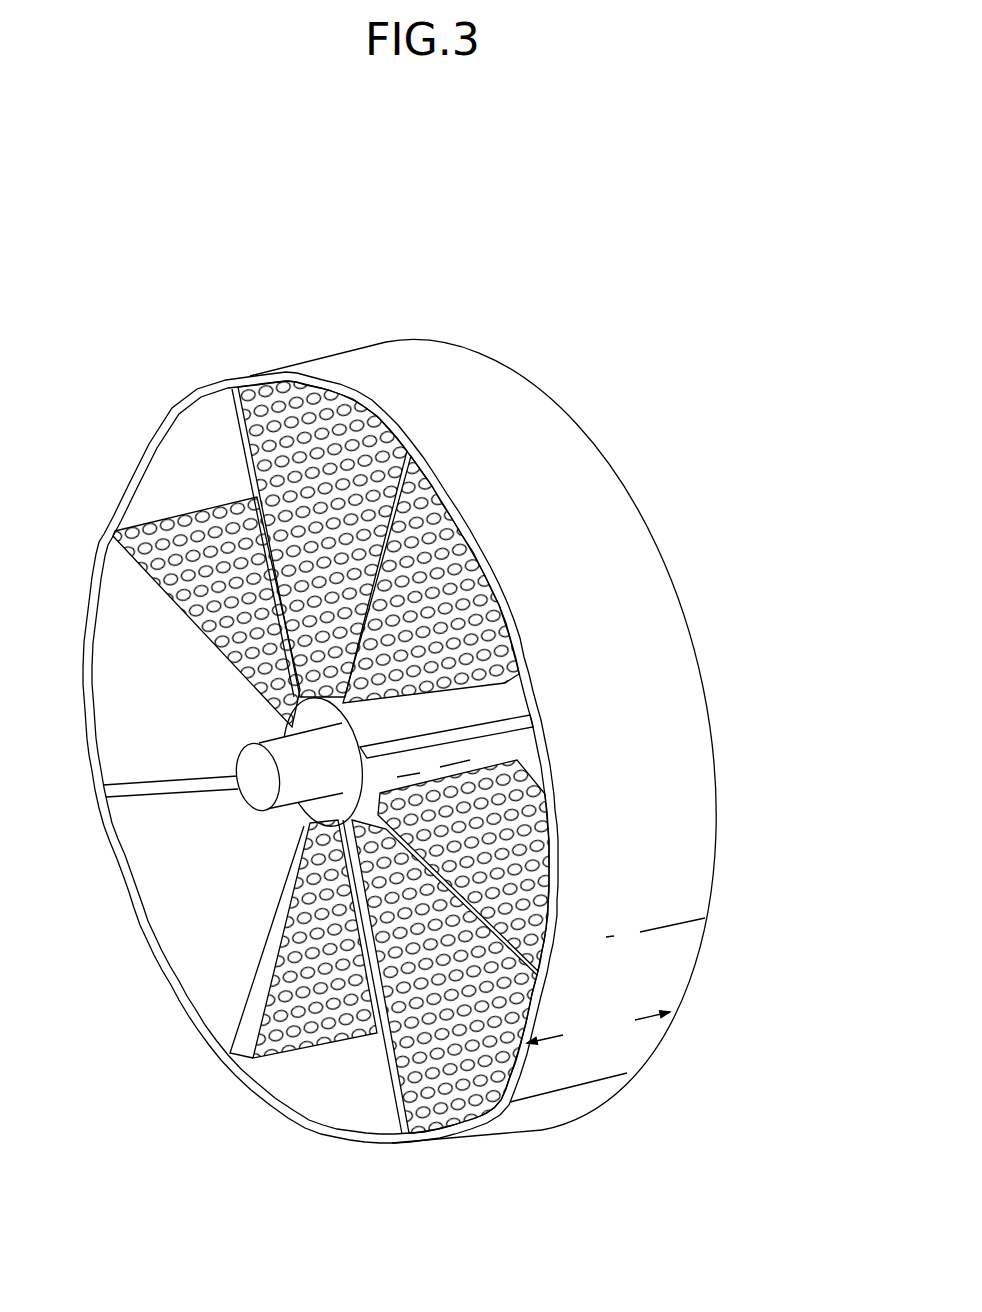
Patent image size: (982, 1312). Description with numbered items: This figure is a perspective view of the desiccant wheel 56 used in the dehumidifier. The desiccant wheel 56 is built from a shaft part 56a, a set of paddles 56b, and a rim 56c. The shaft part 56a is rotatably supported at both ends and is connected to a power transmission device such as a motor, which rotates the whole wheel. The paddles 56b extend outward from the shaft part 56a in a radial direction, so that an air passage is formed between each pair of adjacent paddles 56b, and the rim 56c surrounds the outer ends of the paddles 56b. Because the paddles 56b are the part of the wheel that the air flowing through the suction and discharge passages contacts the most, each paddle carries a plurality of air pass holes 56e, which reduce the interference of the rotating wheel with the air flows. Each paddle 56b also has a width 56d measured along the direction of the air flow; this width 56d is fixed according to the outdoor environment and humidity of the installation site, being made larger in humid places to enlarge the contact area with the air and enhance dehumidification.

The desiccant wheel 56 is at (723, 361).
The shaft part 56a is at (257, 787).
The paddles 56b is at (483, 1097).
The rim 56c is at (687, 808).
The width 56d is at (598, 1026).
The air pass holes 56e is at (261, 1058).